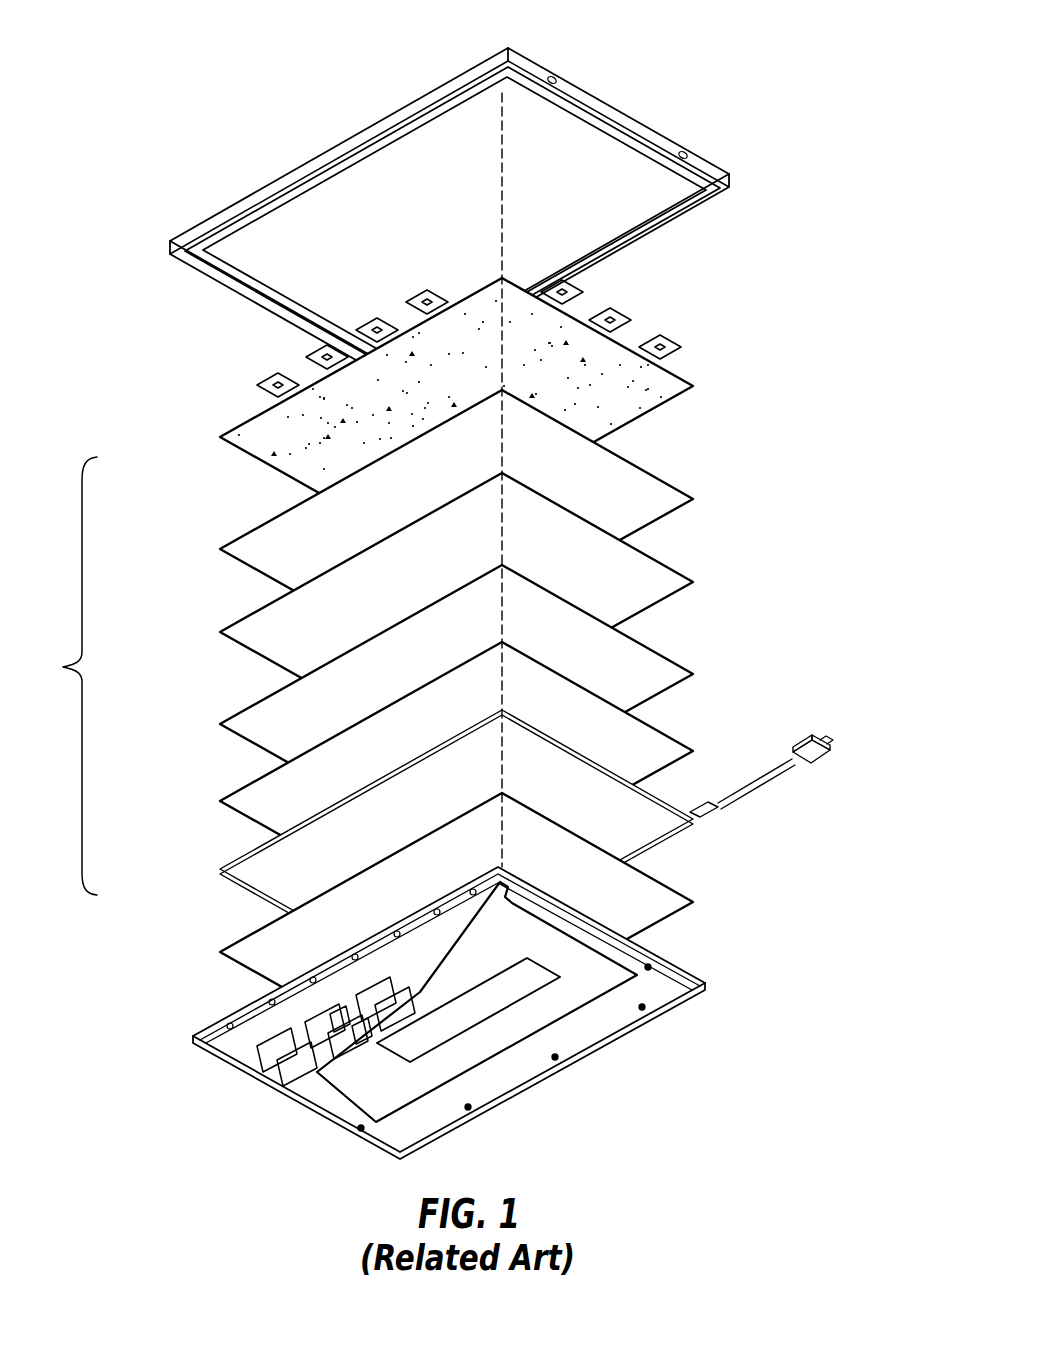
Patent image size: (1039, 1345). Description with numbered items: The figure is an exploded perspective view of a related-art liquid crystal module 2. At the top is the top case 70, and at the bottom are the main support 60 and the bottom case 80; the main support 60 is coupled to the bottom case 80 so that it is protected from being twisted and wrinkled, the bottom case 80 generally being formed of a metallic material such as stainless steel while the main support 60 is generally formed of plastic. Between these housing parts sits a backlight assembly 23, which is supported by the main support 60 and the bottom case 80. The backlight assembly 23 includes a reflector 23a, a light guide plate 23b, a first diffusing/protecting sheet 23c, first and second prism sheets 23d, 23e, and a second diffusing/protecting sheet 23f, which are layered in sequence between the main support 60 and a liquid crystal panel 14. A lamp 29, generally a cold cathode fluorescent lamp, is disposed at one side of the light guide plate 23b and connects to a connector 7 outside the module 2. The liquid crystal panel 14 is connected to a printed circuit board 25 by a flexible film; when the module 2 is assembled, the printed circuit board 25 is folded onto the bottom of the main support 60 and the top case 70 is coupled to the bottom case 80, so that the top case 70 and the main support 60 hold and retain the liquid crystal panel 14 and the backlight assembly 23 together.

The liquid crystal module 2 is at (833, 198).
The top case 70 is at (603, 88).
The liquid crystal panel 14 is at (655, 400).
The printed circuit board 25 is at (670, 340).
The backlight assembly 23 is at (61, 676).
The reflector 23a is at (237, 950).
The light guide plate 23b is at (248, 868).
The first diffusing/protecting sheet 23c is at (250, 790).
The first prism sheet 23d is at (265, 708).
The second prism sheet 23e is at (262, 620).
The second diffusing/protecting sheet 23f is at (272, 533).
The lamp 29 is at (717, 811).
The connector 7 is at (808, 738).
The main support 60 is at (307, 1100).
The bottom case 80 is at (606, 1033).